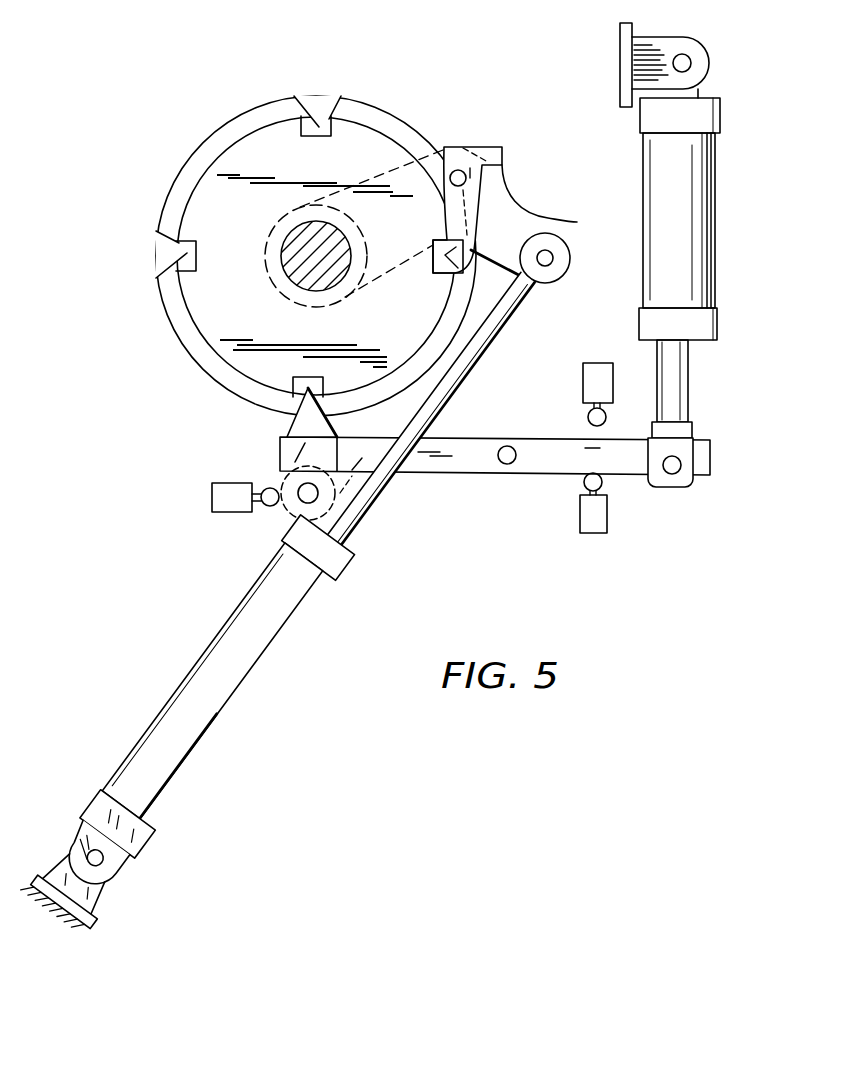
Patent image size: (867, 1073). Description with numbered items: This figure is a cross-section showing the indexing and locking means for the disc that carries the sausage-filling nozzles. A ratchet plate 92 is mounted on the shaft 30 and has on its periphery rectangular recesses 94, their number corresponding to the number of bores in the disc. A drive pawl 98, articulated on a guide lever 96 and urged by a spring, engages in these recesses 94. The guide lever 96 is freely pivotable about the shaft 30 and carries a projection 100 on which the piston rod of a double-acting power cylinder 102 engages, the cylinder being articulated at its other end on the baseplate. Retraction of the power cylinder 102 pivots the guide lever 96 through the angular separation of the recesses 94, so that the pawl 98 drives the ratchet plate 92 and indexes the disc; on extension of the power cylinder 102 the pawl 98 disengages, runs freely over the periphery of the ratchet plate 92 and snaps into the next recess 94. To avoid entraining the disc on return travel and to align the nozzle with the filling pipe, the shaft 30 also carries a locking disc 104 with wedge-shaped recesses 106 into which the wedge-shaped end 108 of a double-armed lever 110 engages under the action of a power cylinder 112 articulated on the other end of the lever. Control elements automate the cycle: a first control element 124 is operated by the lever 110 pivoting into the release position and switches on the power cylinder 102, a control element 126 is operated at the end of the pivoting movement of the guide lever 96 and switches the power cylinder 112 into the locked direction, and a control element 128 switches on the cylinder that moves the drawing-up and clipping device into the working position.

The shaft 30 is at (291, 273).
The ratchet plate 92 is at (392, 140).
The rectangular recesses 94 is at (339, 105).
The guide lever 96 is at (413, 157).
The drive pawl 98 is at (447, 252).
The projection 100 is at (580, 221).
The double-acting power cylinder 102 is at (221, 718).
The locking disc 104 is at (226, 120).
The wedge-shaped recesses 106 is at (162, 250).
The wedge-shaped end 108 is at (297, 423).
The double-armed lever 110 is at (458, 459).
The power cylinder 112 is at (702, 212).
The first control element 124 is at (594, 378).
The control element 126 is at (218, 502).
The control element 128 is at (597, 520).